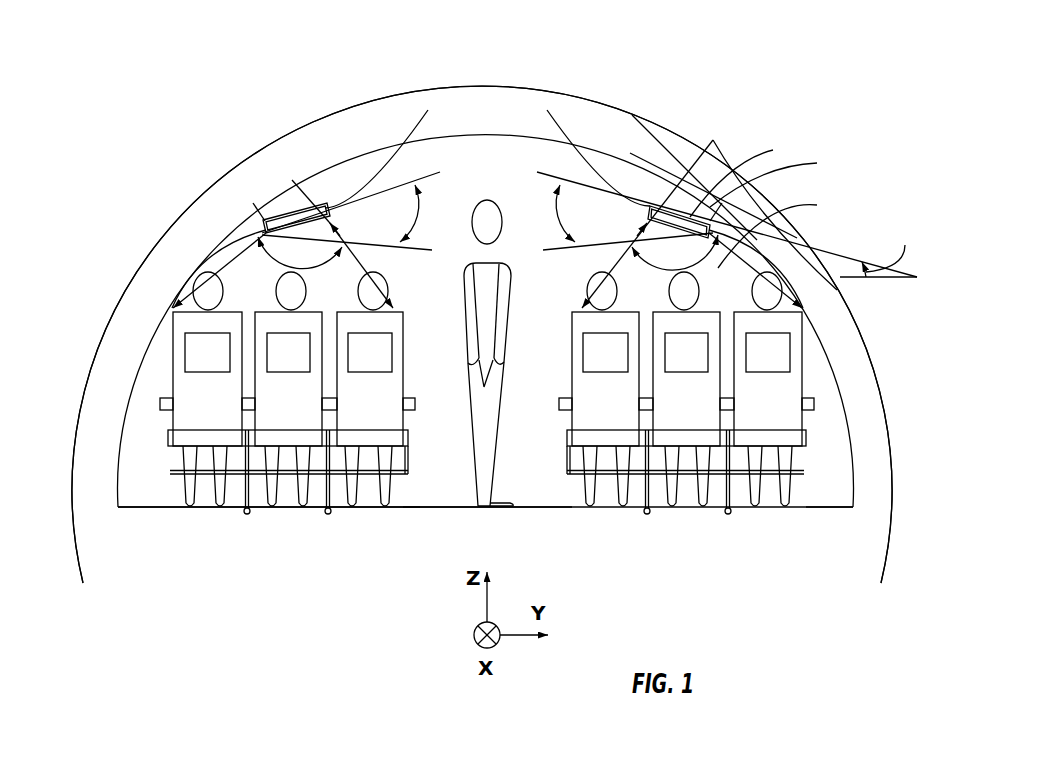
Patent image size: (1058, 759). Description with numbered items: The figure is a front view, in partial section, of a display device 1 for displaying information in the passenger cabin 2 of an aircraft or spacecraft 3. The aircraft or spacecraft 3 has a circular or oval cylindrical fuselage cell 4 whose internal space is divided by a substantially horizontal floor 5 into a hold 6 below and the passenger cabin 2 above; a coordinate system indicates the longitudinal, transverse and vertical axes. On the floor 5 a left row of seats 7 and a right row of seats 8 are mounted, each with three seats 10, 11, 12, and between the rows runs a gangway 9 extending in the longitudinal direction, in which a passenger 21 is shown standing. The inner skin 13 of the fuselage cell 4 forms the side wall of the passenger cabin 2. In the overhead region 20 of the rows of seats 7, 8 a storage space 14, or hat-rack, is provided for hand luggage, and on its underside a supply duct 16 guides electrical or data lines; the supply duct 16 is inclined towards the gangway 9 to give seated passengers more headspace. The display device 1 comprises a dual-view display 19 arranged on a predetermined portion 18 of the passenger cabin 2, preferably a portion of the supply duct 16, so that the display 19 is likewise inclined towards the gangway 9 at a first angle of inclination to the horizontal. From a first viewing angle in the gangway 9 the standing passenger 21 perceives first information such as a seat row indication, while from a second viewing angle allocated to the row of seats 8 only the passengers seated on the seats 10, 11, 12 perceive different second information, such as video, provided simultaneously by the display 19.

The display device 1 is at (662, 230).
The passenger cabin 2 is at (510, 172).
The aircraft or spacecraft 3 is at (760, 124).
The fuselage cell 4 is at (167, 245).
The floor 5 is at (157, 508).
The hold 6 is at (386, 547).
The left row of seats 7 is at (170, 370).
The right row of seats 8 is at (803, 352).
The gangway 9 is at (453, 423).
The seat 10 is at (220, 412).
The seat 11 is at (303, 412).
The seat 12 is at (385, 412).
The inner skin 13 is at (853, 467).
The storage space 14 is at (580, 153).
The supply duct 16 is at (688, 203).
The predetermined portion 18 is at (762, 153).
The display 19 is at (805, 164).
The overhead region 20 is at (805, 206).
The passenger 21 is at (487, 305).